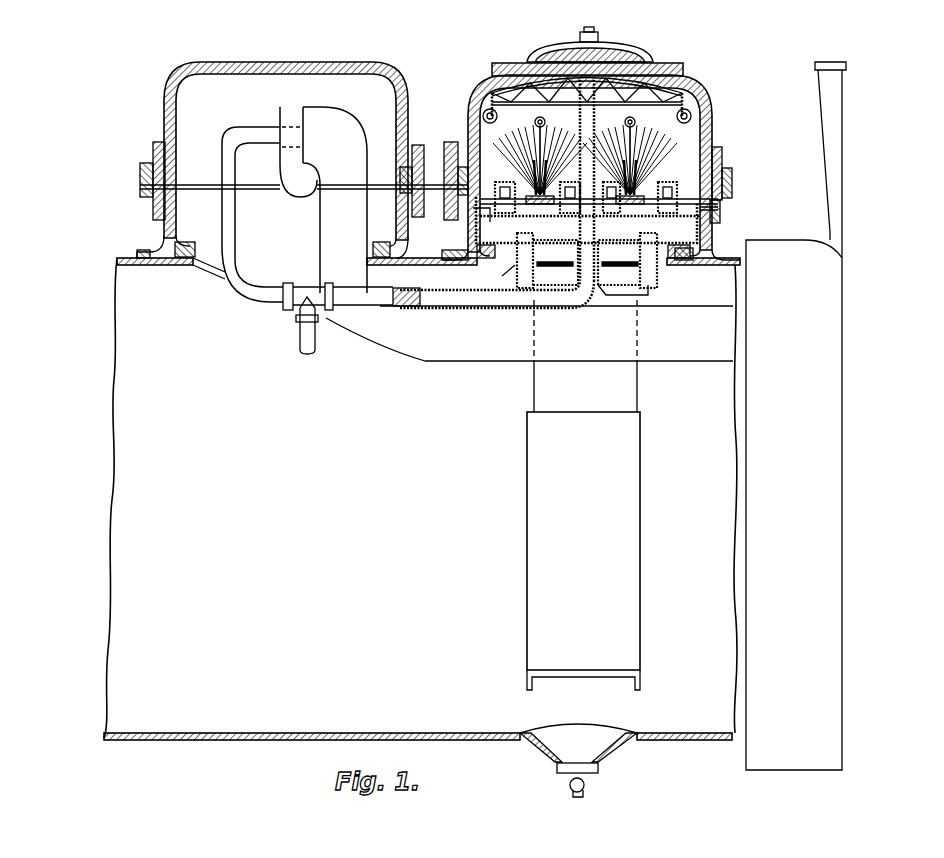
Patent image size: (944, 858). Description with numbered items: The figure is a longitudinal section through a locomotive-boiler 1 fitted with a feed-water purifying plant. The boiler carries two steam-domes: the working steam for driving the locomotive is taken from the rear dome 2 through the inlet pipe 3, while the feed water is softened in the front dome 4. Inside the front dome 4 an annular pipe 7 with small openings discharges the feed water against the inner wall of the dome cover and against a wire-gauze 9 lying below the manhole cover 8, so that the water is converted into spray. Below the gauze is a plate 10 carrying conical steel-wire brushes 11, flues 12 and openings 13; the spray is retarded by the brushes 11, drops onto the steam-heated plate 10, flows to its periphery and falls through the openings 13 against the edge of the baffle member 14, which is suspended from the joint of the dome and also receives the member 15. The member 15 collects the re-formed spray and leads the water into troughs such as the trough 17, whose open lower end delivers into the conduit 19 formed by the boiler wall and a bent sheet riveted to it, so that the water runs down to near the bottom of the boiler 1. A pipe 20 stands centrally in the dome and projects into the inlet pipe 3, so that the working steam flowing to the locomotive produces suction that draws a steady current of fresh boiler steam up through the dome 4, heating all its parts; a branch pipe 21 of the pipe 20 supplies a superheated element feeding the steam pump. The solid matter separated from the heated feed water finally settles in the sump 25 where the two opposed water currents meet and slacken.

The locomotive-boiler 1 is at (127, 303).
The rear dome 2 is at (150, 170).
The inlet pipe 3 is at (357, 177).
The front dome 4 is at (730, 173).
The annular pipe 7 is at (698, 113).
The cover 8 is at (650, 63).
The wire-gauze 9 is at (500, 83).
The plate 10 is at (720, 217).
The conical steel-wire brushes 11 is at (500, 147).
The flues 12 is at (667, 213).
The openings 13 is at (487, 217).
The member 14 is at (717, 205).
The member 15 is at (648, 283).
The trough 17 is at (543, 390).
The conduit 19 is at (538, 557).
The pipe 20 is at (463, 300).
The branch pipe 21 is at (310, 338).
The sump 25 is at (615, 762).